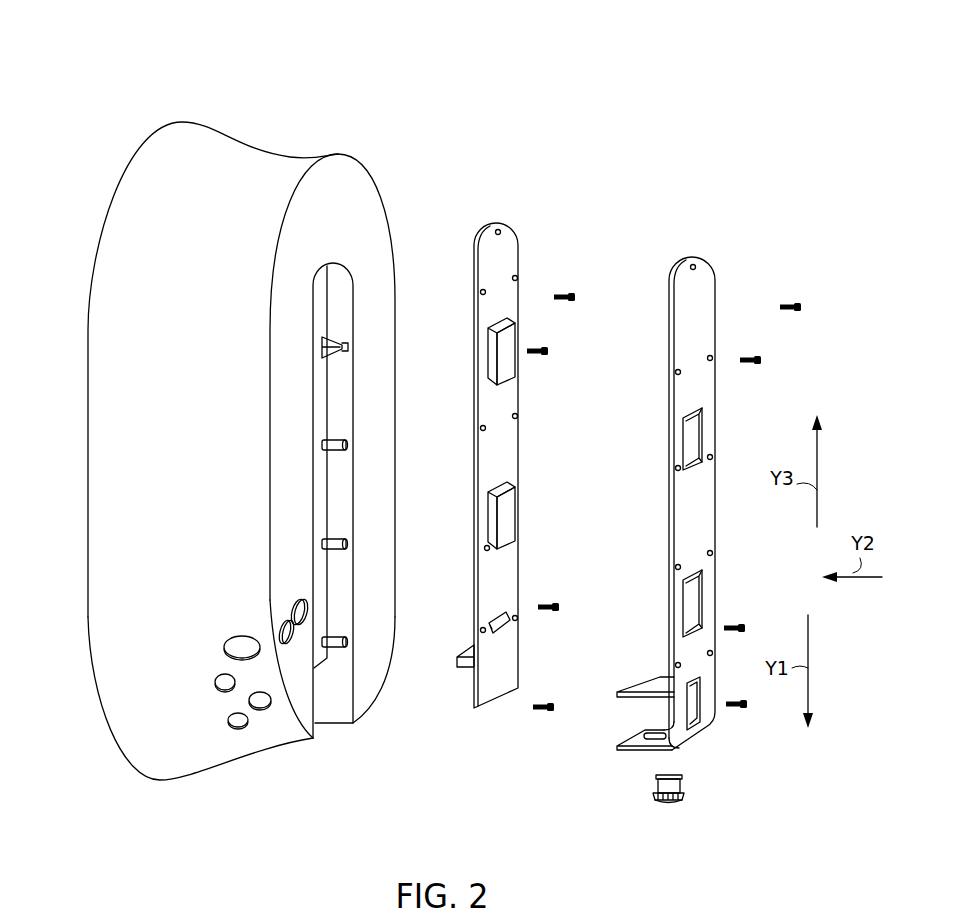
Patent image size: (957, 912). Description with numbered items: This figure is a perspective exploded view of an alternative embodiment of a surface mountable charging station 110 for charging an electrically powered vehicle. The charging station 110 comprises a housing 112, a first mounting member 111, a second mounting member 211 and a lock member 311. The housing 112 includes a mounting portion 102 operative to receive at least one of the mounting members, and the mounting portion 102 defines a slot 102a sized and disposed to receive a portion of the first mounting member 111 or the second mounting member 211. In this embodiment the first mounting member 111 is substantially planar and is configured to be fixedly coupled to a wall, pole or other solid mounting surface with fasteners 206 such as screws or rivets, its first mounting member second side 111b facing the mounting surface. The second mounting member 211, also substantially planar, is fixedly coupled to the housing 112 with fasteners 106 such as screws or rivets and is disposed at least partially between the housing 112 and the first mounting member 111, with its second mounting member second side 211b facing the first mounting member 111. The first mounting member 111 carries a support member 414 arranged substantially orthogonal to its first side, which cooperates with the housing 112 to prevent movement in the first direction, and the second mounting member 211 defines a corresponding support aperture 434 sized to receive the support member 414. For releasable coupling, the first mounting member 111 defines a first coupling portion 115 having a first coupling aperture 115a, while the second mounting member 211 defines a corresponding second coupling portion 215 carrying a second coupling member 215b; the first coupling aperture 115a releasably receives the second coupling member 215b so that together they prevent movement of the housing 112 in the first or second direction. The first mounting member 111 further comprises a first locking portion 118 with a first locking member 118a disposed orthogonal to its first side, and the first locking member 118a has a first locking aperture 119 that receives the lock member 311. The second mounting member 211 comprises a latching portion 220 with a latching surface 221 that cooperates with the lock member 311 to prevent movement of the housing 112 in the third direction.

The charging station 110 is at (156, 74).
The housing 112 is at (88, 313).
The mounting portion 102 is at (326, 700).
The slot 102a is at (343, 488).
The second mounting member 211 is at (487, 223).
The second mounting member second side 211b is at (503, 272).
The second coupling portion 215 is at (476, 339).
The second coupling member 215b is at (508, 337).
The latching portion 220 is at (469, 614).
The latching surface 221 is at (462, 652).
The support aperture 434 is at (503, 628).
The fasteners 206 is at (577, 297).
The fasteners 106 is at (796, 302).
The first mounting member 111 is at (703, 255).
The first mounting member second side 111b is at (700, 318).
The first coupling portion 115 is at (672, 447).
The first coupling aperture 115a is at (690, 445).
The support member 414 is at (638, 680).
The first locking aperture 119 is at (657, 731).
The first locking portion 118 is at (616, 760).
The first locking member 118a is at (655, 742).
The lock member 311 is at (688, 800).